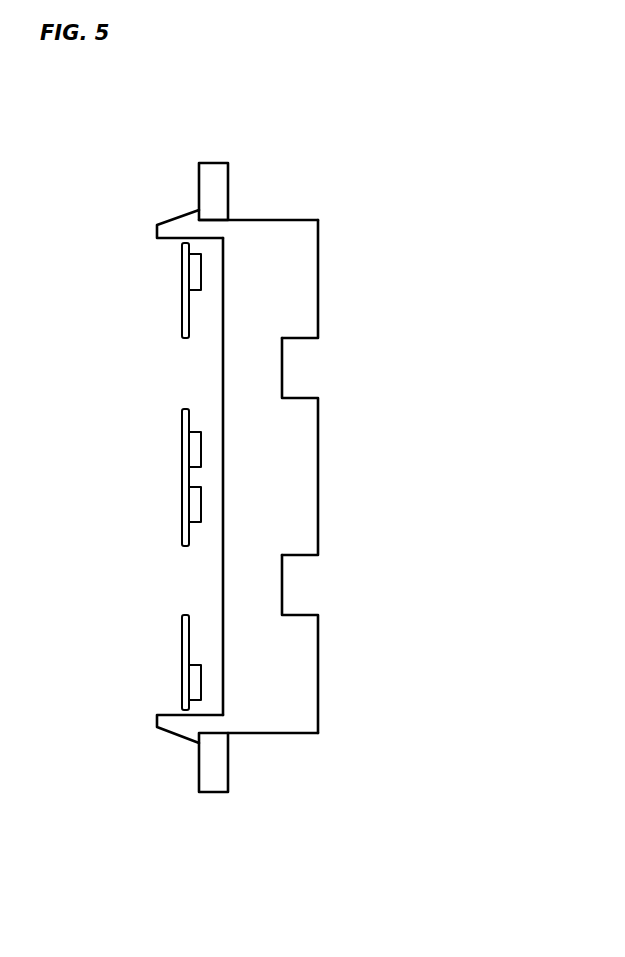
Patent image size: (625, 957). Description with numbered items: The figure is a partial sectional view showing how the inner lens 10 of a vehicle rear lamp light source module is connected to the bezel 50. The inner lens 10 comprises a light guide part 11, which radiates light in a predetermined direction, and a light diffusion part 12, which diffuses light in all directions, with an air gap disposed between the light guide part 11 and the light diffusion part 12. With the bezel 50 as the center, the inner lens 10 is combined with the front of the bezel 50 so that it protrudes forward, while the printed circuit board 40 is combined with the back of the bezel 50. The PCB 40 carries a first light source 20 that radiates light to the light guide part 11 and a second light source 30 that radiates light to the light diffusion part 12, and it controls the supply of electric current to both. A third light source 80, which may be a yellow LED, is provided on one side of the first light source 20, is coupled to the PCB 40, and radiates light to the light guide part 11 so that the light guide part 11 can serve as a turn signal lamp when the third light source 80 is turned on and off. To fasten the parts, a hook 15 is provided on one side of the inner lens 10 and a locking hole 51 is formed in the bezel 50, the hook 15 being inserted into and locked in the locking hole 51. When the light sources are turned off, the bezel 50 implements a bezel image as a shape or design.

The inner lens 10 is at (271, 472).
The light guide part 11 is at (318, 476).
The light diffusion part 12 is at (318, 278).
The hook 15 is at (178, 215).
The first light source 20 is at (190, 447).
The second light source 30 is at (190, 275).
The printed circuit board 40 is at (185, 300).
The bezel 50 is at (225, 177).
The locking hole 51 is at (210, 733).
The third light source 80 is at (190, 508).